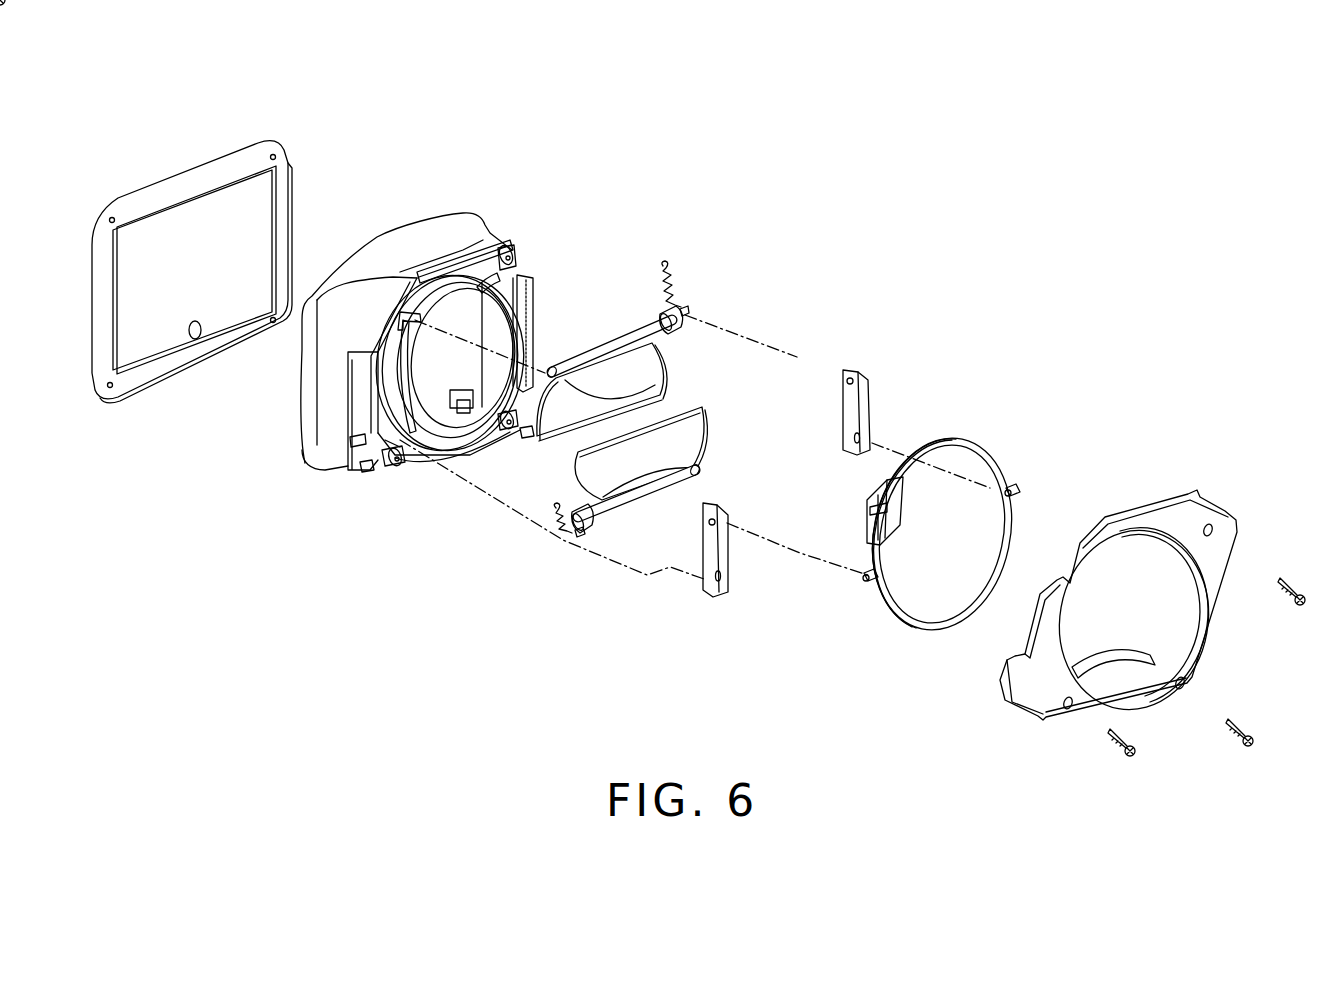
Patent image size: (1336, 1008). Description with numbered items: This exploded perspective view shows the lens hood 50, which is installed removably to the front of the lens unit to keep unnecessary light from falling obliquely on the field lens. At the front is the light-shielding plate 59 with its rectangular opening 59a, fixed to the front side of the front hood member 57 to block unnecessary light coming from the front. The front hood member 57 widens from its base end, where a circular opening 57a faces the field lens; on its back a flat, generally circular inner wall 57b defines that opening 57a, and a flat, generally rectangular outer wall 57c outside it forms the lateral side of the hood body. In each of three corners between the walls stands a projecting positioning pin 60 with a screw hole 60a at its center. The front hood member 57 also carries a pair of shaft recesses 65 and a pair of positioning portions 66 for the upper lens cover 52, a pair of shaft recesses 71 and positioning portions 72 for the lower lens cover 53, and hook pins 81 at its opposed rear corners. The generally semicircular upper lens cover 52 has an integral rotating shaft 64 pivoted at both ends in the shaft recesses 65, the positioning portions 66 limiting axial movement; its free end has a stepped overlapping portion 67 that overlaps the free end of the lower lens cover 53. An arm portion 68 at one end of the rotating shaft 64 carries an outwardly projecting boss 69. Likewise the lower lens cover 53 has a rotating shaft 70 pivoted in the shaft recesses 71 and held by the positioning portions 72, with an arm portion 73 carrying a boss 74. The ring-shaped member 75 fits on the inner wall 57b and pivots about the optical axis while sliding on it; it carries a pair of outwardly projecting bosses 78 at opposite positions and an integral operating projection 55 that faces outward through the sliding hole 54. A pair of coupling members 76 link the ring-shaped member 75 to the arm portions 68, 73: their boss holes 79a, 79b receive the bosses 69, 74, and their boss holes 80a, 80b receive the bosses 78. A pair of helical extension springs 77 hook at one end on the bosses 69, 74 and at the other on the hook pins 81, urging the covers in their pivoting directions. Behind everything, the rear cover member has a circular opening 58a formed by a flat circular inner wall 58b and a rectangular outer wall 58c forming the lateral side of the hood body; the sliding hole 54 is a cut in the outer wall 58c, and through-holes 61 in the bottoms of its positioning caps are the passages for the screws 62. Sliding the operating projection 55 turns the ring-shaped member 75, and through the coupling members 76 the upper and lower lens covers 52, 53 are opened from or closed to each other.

The lens hood 50 is at (267, 61).
The light-shielding plate 59 is at (182, 172).
The rectangular opening 59a is at (200, 339).
The front hood member 57 is at (396, 245).
The circular opening 57a is at (465, 457).
The inner wall 57b is at (510, 338).
The outer wall 57c is at (534, 300).
The positioning portions 66 is at (523, 290).
The shaft recesses 65 is at (485, 288).
The shaft recesses 71 is at (468, 393).
The positioning pin 60 is at (512, 258).
The screw hole 60a is at (520, 278).
The positioning portions 72 is at (528, 434).
The hook pins 81 is at (340, 465).
The upper lens cover 52 is at (688, 368).
The rotating shaft 64 is at (605, 352).
The arm portion 68 is at (678, 330).
The boss 69 is at (688, 318).
The helical extension springs 77 is at (680, 282).
The lower lens cover 53 is at (702, 432).
The stepped overlapping portion 67 is at (645, 405).
The rotating shaft 70 is at (645, 495).
The arm portion 73 is at (590, 540).
The boss 74 is at (578, 540).
The boss hole 79a is at (850, 372).
The boss hole 79b is at (718, 592).
The boss hole 80a is at (855, 445).
The boss hole 80b is at (712, 510).
The coupling members 76 is at (868, 412).
The ring-shaped member 75 is at (940, 634).
The operating projection 55 is at (867, 508).
The bosses 78 is at (866, 582).
The sliding hole 54 is at (1078, 560).
The circular opening 58a is at (1200, 585).
The inner wall 58b is at (1180, 636).
The outer wall 58c is at (1143, 513).
The through-hole 61 is at (1210, 524).
The screw 62 is at (1298, 606).